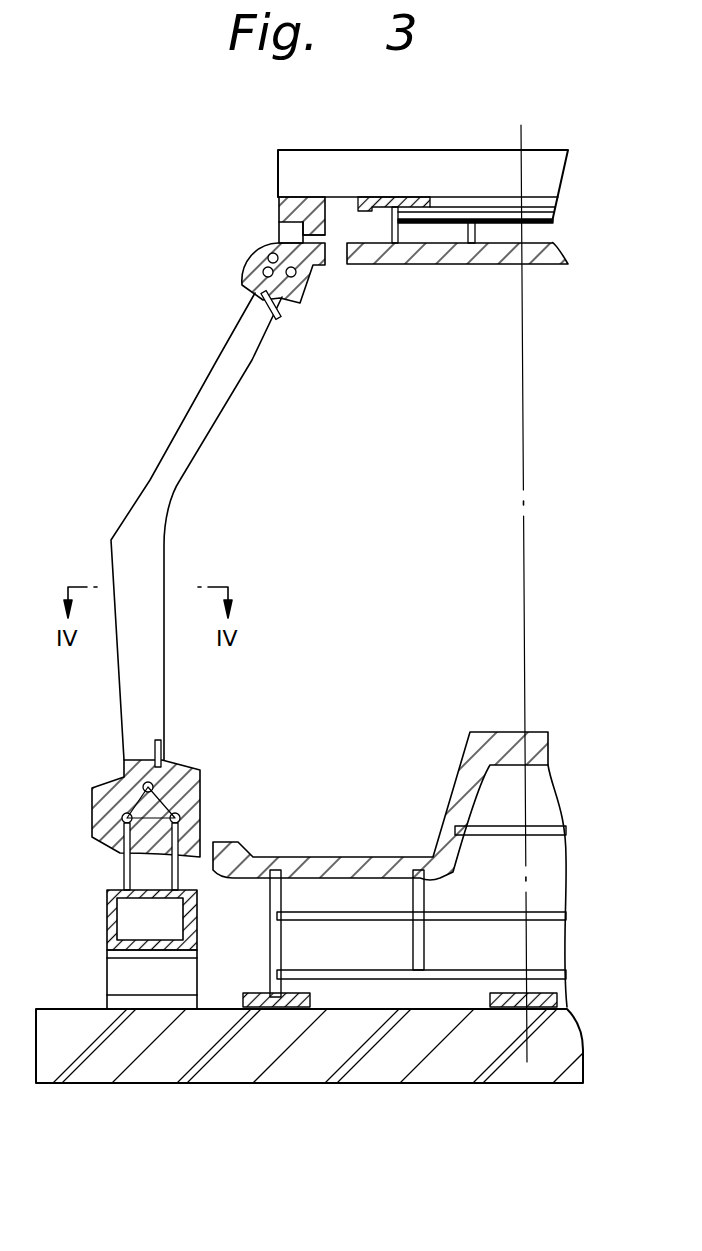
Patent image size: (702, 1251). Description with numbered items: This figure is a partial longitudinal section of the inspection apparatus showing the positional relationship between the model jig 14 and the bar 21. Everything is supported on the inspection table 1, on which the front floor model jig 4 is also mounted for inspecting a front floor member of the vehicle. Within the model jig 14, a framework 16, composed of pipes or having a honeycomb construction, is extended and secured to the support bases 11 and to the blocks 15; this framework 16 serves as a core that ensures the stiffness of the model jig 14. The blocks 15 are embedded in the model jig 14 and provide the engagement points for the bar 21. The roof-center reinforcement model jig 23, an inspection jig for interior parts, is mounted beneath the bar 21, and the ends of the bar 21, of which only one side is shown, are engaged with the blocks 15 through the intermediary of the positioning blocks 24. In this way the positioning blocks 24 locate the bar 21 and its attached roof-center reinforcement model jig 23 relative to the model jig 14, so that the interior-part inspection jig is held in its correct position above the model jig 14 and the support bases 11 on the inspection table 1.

The inspection table 1 is at (163, 1063).
The front floor model jig 4 is at (380, 857).
The support base 11 is at (107, 920).
The model jig 14 is at (150, 542).
The block 15 is at (293, 237).
The framework 16 is at (252, 292).
The bar 21 is at (450, 168).
The roof-center reinforcement model jig 23 is at (403, 253).
The positioning block 24 is at (300, 202).